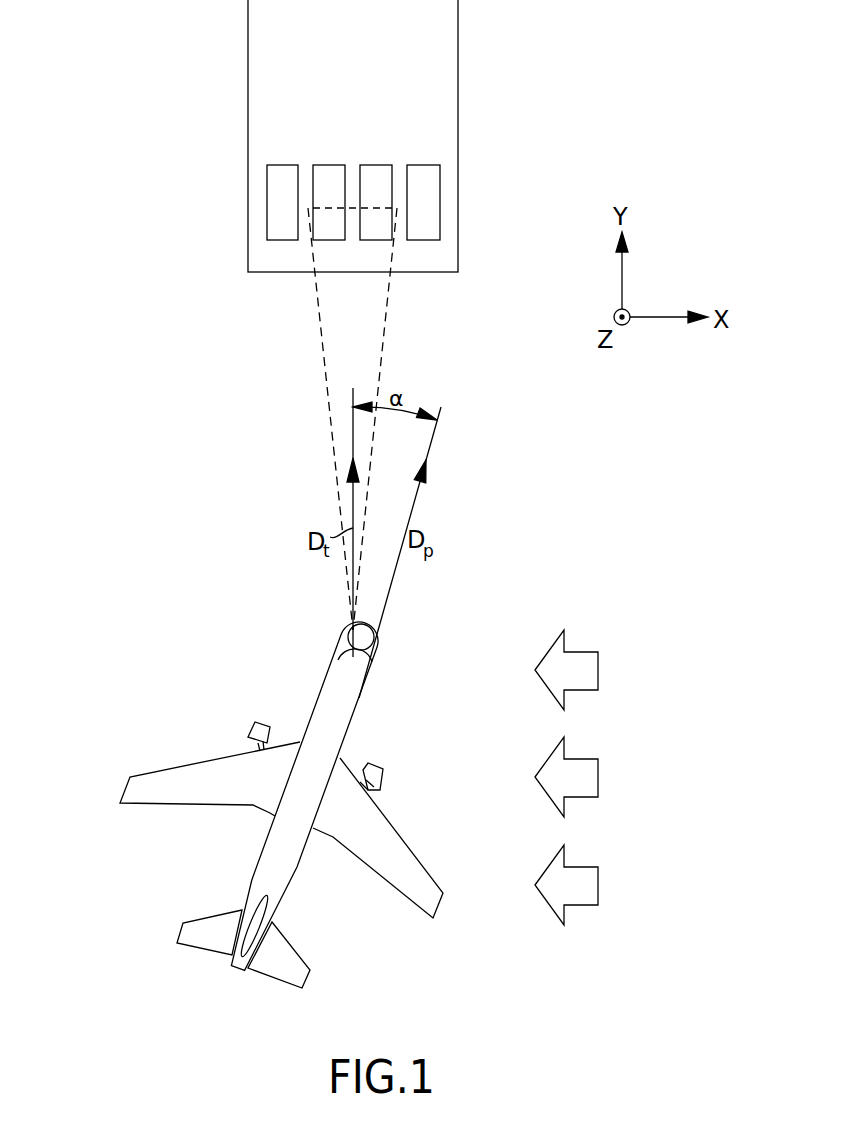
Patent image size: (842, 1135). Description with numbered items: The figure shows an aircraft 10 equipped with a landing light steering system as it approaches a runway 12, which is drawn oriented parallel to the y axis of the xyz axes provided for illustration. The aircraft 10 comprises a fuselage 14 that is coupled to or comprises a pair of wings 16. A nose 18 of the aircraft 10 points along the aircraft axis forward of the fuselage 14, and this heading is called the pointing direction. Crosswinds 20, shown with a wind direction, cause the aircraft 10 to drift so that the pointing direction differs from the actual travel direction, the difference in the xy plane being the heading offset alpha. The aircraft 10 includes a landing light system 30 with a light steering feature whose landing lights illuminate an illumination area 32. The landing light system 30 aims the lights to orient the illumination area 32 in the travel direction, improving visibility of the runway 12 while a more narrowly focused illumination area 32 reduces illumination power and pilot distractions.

The aircraft 10 is at (279, 785).
The runway 12 is at (268, 282).
The fuselage 14 is at (318, 718).
The wings 16 is at (178, 783).
The nose 18 is at (372, 633).
The crosswinds 20 is at (582, 791).
The landing light system 30 is at (363, 657).
The illumination area 32 is at (383, 348).